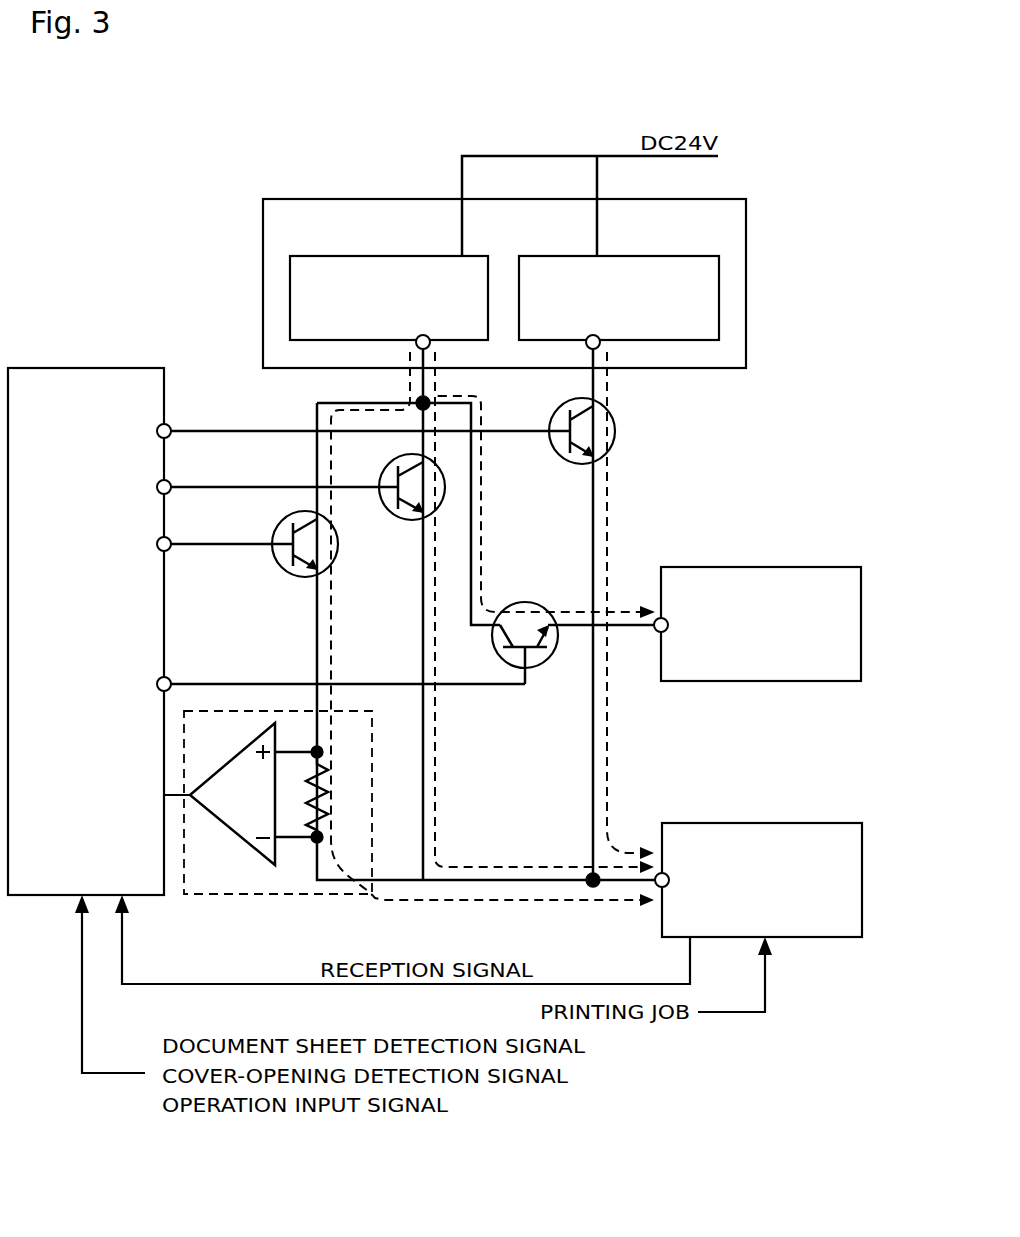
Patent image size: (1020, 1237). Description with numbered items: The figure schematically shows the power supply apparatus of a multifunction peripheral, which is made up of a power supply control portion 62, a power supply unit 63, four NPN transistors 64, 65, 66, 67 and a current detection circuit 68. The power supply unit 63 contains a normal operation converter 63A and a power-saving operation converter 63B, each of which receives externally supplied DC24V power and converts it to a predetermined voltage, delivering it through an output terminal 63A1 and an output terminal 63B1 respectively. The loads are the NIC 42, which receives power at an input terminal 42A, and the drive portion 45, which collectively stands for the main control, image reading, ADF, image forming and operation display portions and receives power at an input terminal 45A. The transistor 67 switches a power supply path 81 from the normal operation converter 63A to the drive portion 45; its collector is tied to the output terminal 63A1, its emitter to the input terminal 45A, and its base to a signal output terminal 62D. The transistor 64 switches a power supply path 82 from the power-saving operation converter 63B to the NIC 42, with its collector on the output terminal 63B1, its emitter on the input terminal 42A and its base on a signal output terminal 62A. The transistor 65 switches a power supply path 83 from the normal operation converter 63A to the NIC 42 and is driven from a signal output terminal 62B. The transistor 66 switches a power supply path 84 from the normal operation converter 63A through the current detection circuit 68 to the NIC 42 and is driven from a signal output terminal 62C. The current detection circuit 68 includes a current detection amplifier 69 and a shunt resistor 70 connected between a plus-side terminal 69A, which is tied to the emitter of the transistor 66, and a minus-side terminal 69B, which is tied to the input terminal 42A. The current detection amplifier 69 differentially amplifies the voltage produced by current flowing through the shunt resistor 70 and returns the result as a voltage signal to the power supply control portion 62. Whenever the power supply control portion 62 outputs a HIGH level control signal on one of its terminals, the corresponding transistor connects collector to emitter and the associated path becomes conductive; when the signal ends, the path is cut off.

The NIC 42 is at (733, 823).
The input terminal of the NIC 42A is at (687, 881).
The drive portion 45 is at (735, 567).
The input terminal of the drive portion 45A is at (686, 625).
The power supply control portion 62 is at (88, 368).
The signal output terminal 62A is at (337, 432).
The signal output terminal 62B is at (251, 489).
The signal output terminal 62C is at (199, 546).
The signal output terminal 62D is at (315, 686).
The power supply unit 63 is at (263, 222).
The normal operation converter 63A is at (290, 306).
The output terminal of the N-converter 63A1 is at (452, 350).
The power-saving operation converter 63B is at (719, 306).
The output terminal of the S-converter 63B1 is at (622, 350).
The transistor 64 is at (562, 458).
The transistor 65 is at (415, 517).
The transistor 66 is at (287, 577).
The transistor 67 is at (537, 668).
The current detection circuit 68 is at (313, 895).
The current detection amplifier 69 is at (230, 834).
The plus-side terminal 69A is at (289, 750).
The minus-side terminal 69B is at (283, 843).
The shunt resistor 70 is at (327, 825).
The power supply path 81 is at (483, 547).
The power supply path 82 is at (609, 528).
The power supply path 83 is at (435, 762).
The power supply path 84 is at (333, 661).